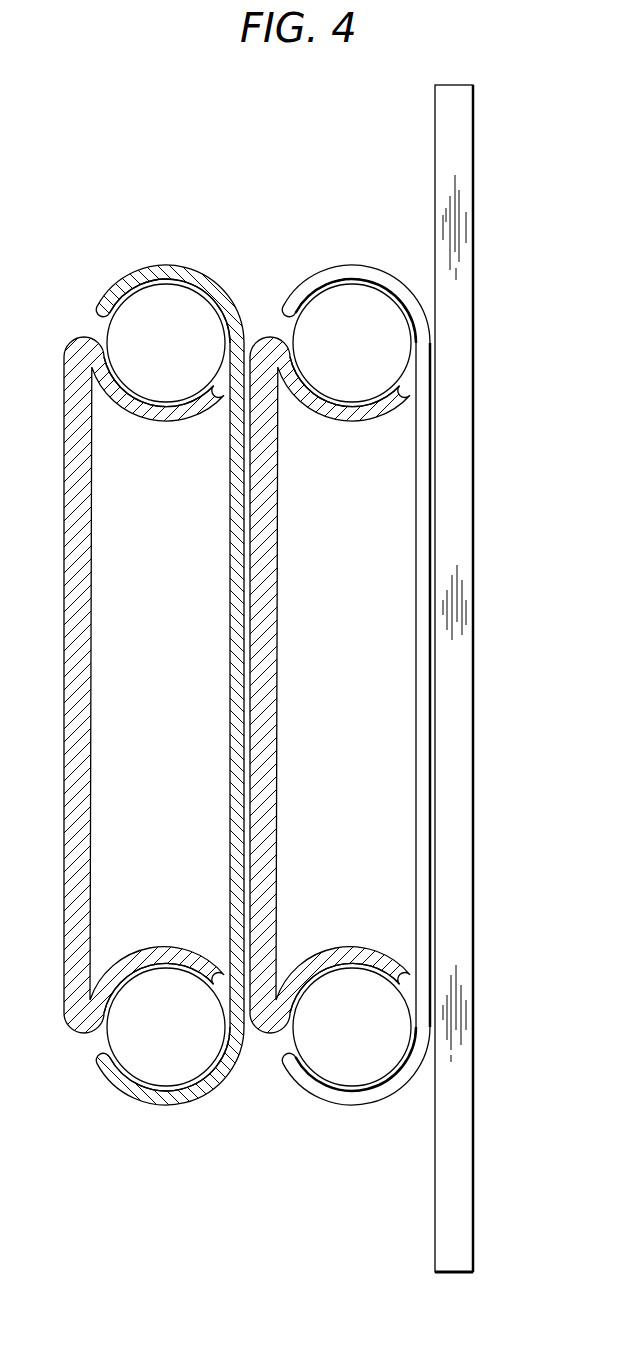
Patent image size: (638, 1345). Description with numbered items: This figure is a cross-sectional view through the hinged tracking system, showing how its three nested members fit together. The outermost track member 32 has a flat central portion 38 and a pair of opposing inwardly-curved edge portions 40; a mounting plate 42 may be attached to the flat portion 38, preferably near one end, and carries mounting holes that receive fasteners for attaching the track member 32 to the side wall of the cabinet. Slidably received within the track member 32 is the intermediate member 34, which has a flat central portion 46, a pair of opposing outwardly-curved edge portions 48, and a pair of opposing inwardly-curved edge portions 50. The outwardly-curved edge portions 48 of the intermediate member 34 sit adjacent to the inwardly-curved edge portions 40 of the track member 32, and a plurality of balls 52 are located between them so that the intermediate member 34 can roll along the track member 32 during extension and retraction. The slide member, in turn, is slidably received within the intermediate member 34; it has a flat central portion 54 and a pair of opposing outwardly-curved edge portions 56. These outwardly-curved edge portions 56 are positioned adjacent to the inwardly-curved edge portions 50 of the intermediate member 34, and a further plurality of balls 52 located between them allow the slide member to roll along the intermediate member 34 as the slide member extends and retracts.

The track member 32 is at (418, 729).
The intermediate member 34 is at (270, 775).
The flat central portion 38 is at (424, 578).
The inwardly-curved edge portions 40 is at (365, 265).
The mounting plate 42 is at (460, 703).
The flat central portion 46 is at (244, 672).
The outwardly-curved edge portions 48 is at (346, 421).
The inwardly-curved edge portions 50 is at (163, 268).
The balls 52 is at (342, 313).
The flat central portion 54 is at (88, 580).
The outwardly-curved edge portions 56 is at (158, 420).